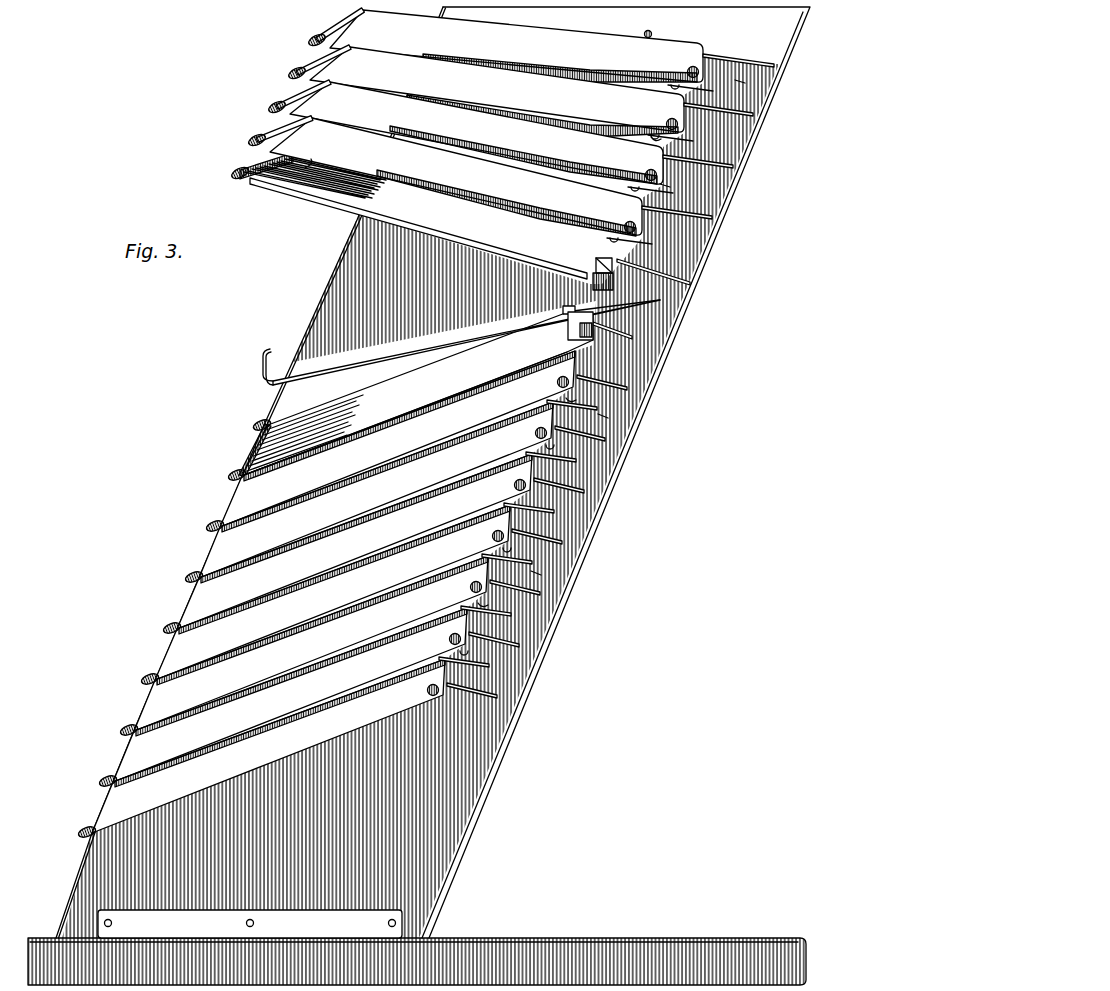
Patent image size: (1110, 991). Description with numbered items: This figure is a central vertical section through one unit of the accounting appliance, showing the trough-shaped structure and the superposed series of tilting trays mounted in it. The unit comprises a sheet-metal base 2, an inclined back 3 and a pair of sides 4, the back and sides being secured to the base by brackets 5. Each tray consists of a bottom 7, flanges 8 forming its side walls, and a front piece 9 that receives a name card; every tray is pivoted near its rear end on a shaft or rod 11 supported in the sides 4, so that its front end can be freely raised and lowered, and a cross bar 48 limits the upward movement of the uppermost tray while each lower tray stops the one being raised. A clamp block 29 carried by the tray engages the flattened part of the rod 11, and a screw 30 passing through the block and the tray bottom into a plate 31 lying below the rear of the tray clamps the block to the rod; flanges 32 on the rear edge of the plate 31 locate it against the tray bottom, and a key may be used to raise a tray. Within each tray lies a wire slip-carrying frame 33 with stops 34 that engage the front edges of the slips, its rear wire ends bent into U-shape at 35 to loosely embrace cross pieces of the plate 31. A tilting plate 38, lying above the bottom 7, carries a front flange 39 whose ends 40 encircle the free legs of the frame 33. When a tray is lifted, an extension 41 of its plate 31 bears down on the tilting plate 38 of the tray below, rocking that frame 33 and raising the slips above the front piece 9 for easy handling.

The base 2 is at (567, 942).
The inclined back 3 is at (640, 420).
The side 4 is at (330, 287).
The bracket 5 is at (110, 910).
The bottom 7 is at (288, 188).
The flange 8 is at (393, 53).
The front piece 9 is at (322, 66).
The shaft or pivot rod 11 is at (690, 70).
The clamp block 29 is at (632, 268).
The screw 30 is at (597, 270).
The plate 31 is at (692, 88).
The flange (key) 32 is at (686, 118).
The slip-carrying frame 33 is at (427, 227).
The stop or projection 34 is at (313, 167).
The U-bend 35 is at (665, 140).
The tilting plate 38 is at (745, 58).
The flange 39 is at (565, 311).
The sleeve or bent end 40 is at (568, 328).
The extension or projection 41 is at (735, 82).
The cross bar 48 is at (650, 28).